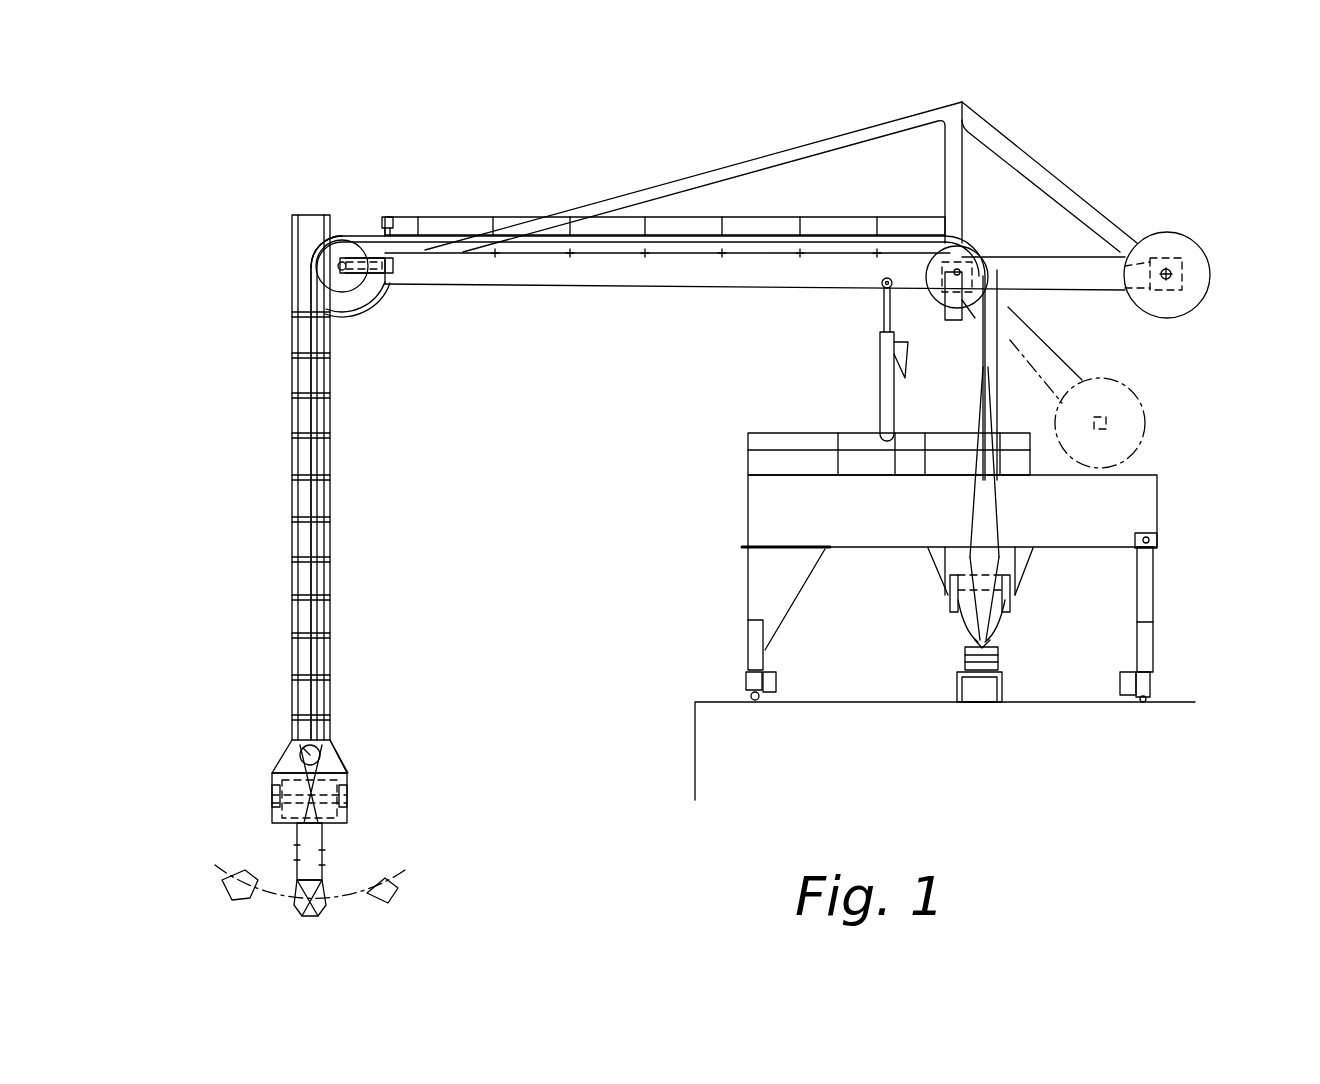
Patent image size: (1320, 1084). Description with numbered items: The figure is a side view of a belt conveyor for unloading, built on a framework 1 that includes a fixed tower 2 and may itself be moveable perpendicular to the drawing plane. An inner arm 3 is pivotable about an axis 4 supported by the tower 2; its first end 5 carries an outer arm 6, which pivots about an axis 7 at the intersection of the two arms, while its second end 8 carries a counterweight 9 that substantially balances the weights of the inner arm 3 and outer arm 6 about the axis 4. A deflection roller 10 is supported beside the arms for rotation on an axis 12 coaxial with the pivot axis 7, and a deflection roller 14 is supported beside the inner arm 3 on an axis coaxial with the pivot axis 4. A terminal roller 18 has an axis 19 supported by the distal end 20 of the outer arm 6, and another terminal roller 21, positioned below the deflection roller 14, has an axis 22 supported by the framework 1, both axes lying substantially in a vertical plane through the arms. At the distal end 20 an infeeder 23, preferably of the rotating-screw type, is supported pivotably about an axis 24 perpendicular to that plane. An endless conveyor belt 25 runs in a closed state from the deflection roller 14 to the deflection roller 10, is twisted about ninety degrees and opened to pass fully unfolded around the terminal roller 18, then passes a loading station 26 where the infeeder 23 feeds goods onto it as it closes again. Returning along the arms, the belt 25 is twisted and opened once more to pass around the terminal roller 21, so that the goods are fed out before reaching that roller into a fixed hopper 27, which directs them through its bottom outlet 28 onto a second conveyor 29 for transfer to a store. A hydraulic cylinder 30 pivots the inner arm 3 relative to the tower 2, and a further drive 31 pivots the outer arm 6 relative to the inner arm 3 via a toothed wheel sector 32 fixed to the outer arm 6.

The framework 1 is at (748, 496).
The fixed tower 2 is at (958, 352).
The inner arm 3 is at (693, 284).
The axis 4 is at (1093, 252).
The first end 5 is at (392, 289).
The outer arm 6 is at (337, 505).
The axis 7 is at (354, 230).
The second end 8 is at (1132, 250).
The counterweight 9 is at (1195, 273).
The deflection roller 10 is at (345, 260).
The axis 12 is at (318, 273).
The deflection roller 14 is at (975, 256).
The terminal roller 18 is at (338, 812).
The axis 19 is at (346, 788).
The distal end 20 is at (331, 752).
The terminal roller 21 is at (960, 606).
The axis 22 is at (948, 600).
The infeeder 23 is at (322, 866).
The axis 24 is at (302, 740).
The endless conveyor belt 25 is at (775, 234).
The loading station 26 is at (270, 792).
The fixed hopper 27 is at (985, 626).
The bottom outlet 28 is at (988, 643).
The second conveyor 29 is at (968, 644).
The hydraulic cylinder 30 is at (882, 384).
The drive 31 is at (392, 222).
The toothed wheel sector 32 is at (360, 297).